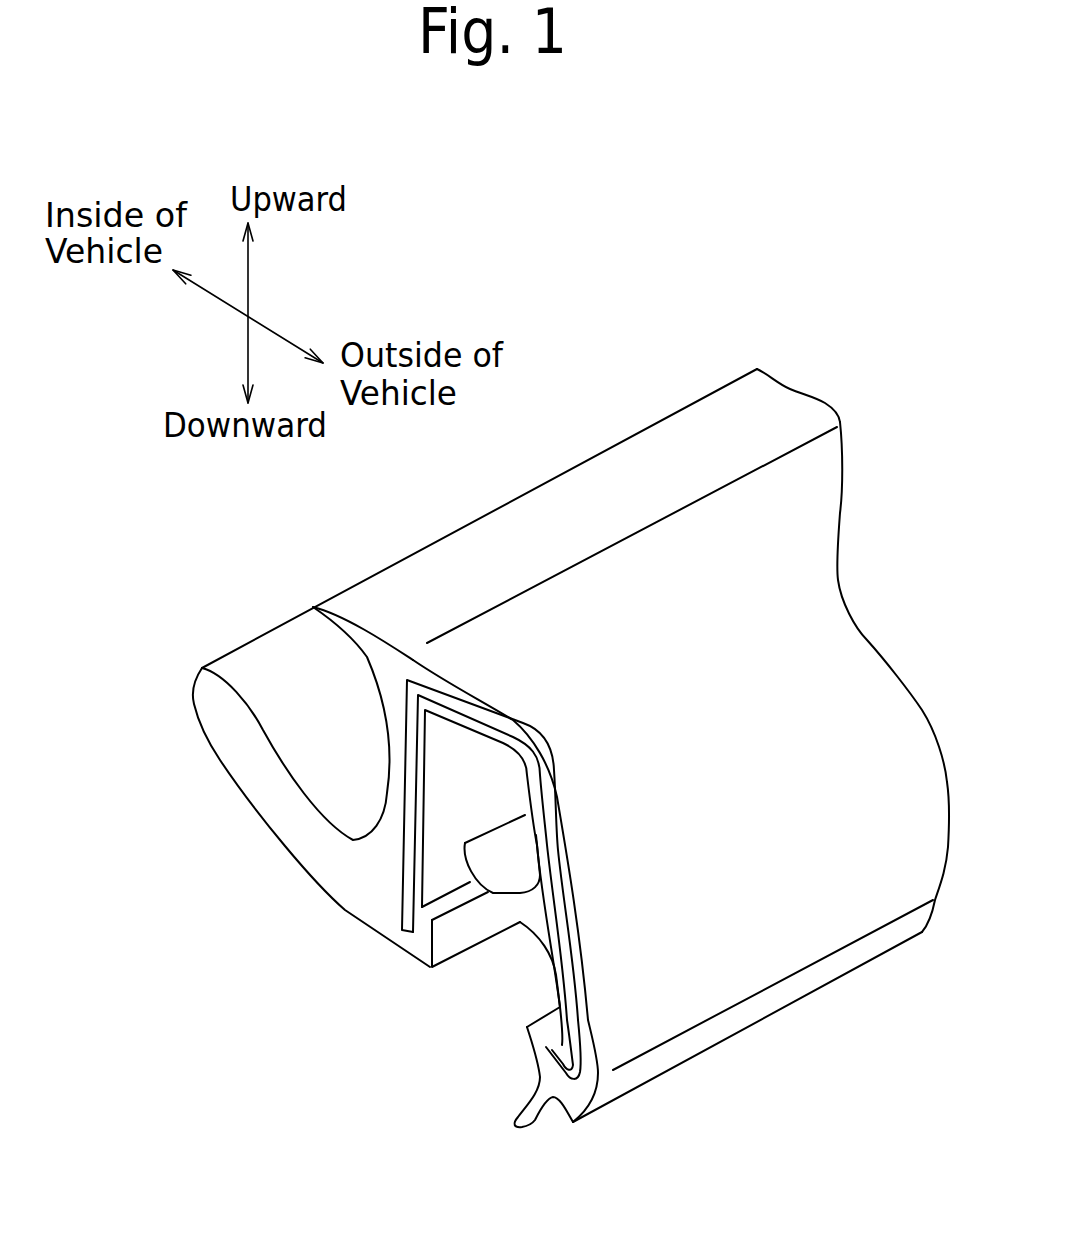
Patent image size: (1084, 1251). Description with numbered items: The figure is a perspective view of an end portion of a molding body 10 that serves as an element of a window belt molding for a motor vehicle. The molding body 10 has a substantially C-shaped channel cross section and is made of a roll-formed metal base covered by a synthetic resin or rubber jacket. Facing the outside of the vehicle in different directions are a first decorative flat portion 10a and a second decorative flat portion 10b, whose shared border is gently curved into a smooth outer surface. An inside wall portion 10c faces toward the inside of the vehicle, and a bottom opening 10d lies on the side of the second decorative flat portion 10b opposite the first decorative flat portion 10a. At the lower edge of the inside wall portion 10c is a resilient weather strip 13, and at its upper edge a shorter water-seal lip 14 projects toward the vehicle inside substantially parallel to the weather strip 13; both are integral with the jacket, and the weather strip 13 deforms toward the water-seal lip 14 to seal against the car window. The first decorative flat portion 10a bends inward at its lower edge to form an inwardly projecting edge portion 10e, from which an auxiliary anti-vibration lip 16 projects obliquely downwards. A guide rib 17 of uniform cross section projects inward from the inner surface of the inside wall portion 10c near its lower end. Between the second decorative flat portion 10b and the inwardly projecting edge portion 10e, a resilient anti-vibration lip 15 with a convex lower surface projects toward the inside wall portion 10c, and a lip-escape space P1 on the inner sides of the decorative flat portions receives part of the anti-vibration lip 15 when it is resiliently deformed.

The molding body 10 is at (633, 382).
The first decorative flat portion 10a is at (767, 957).
The second decorative flat portion 10b is at (570, 607).
The inside wall portion 10c is at (386, 794).
The bottom opening 10d is at (527, 1028).
The inwardly projecting edge portion 10e is at (528, 1045).
The weather strip 13 is at (246, 658).
The water-seal lip 14 is at (347, 598).
The anti-vibration lip 15 is at (482, 890).
The auxiliary anti-vibration lip 16 is at (517, 1122).
The guide rib 17 is at (446, 941).
The lip-escape space P1 is at (484, 770).